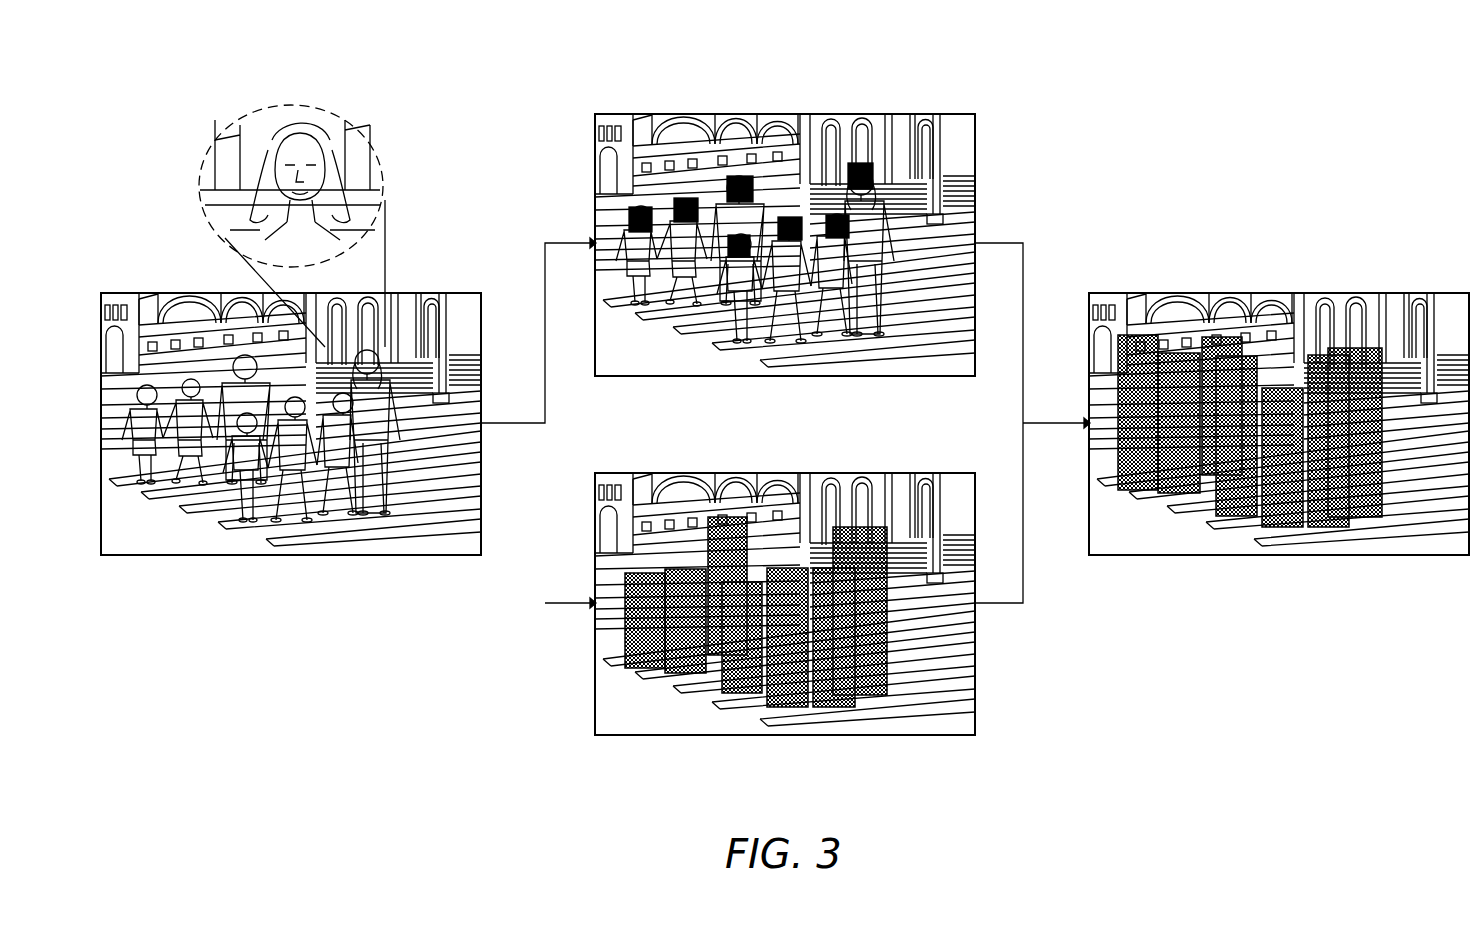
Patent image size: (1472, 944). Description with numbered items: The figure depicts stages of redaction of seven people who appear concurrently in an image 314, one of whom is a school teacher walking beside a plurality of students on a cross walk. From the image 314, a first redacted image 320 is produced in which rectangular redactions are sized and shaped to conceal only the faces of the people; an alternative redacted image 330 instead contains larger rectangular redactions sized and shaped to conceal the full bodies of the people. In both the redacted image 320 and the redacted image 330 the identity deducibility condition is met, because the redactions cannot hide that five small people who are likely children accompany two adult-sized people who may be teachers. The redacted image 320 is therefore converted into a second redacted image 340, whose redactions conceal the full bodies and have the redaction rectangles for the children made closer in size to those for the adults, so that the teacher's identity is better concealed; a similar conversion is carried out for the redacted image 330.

The image 314 is at (413, 293).
The redacted image 320 is at (975, 167).
The alternative redacted image 330 is at (975, 660).
The redacted image 340 is at (1313, 293).